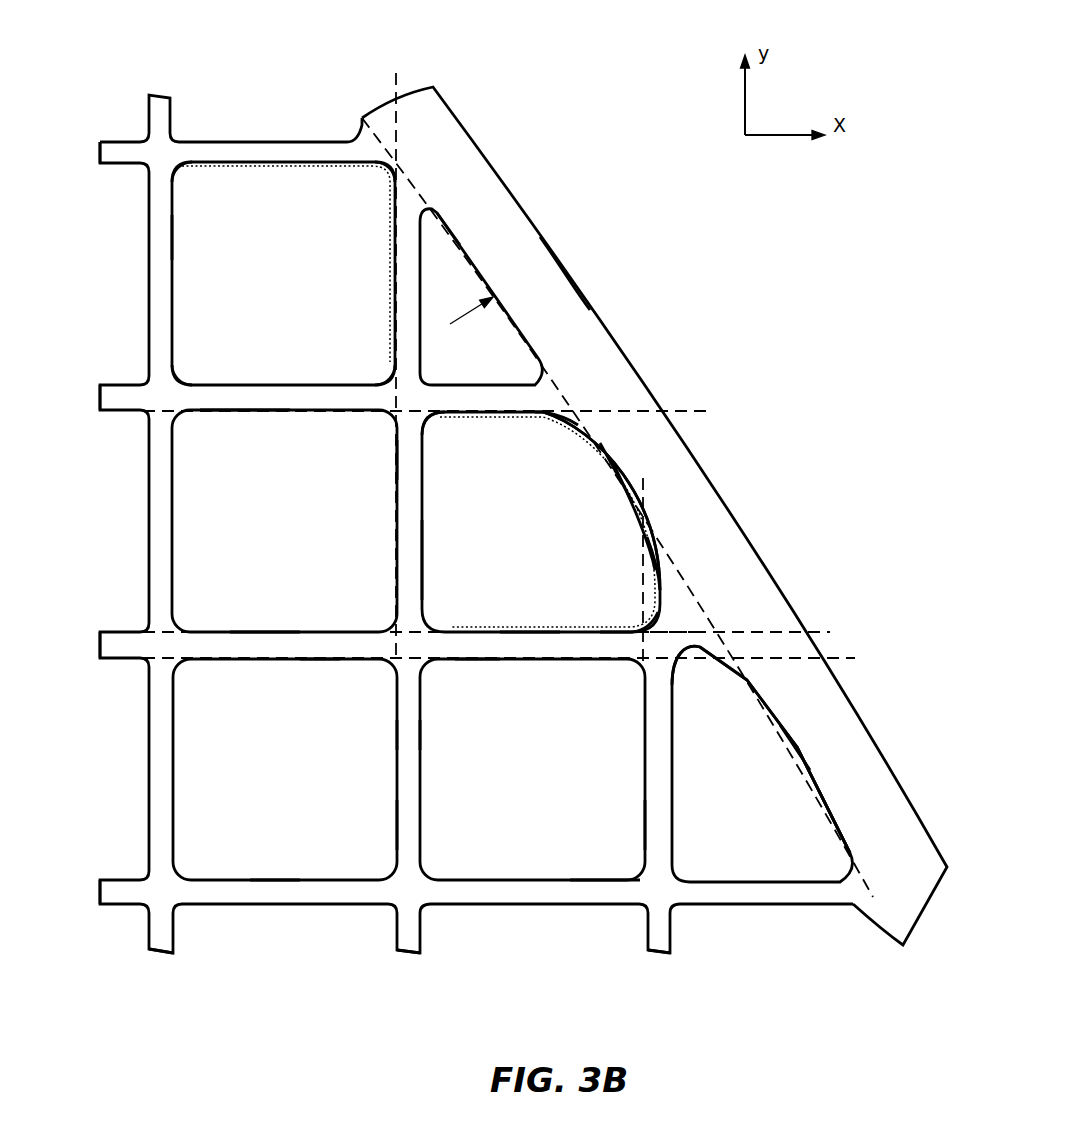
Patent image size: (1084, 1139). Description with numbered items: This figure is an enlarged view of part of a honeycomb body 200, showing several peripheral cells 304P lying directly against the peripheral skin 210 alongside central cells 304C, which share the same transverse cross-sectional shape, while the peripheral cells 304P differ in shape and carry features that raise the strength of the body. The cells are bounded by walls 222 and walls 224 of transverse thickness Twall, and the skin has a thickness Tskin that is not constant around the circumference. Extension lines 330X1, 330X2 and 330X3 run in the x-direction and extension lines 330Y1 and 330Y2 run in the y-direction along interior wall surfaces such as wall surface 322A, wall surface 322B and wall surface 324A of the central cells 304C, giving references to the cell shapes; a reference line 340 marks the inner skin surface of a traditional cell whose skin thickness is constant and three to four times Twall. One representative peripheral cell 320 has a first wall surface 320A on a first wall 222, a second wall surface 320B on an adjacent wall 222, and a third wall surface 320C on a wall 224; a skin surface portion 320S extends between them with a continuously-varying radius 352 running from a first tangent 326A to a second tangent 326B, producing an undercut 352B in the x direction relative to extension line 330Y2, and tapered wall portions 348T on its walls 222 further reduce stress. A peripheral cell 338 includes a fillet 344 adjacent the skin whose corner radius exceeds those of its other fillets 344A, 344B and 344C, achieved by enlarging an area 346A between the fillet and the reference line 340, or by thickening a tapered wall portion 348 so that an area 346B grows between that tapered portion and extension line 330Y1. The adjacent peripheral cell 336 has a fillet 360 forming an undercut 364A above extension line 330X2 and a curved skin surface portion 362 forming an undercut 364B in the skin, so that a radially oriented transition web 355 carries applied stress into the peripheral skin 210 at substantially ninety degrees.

The honeycomb body 200 is at (233, 73).
The peripheral skin 210 is at (583, 291).
The wall 222 is at (100, 152).
The wall 224 is at (162, 955).
The peripheral cell 304P is at (298, 277).
The central cell 304C is at (305, 534).
The peripheral cell 320 is at (626, 477).
The first wall surface 320A is at (441, 417).
The second wall surface 320B is at (525, 632).
The third wall surface 320C is at (423, 563).
The skin surface portion 320S is at (646, 528).
The wall surface 322A is at (120, 413).
The wall surface 322B is at (263, 632).
The wall surface 324A is at (397, 460).
The first tangent 326A is at (548, 423).
The second tangent 326B is at (622, 632).
The extension line 330X1 is at (683, 411).
The extension line 330X2 is at (855, 658).
The extension line 330X3 is at (830, 632).
The extension line 330Y1 is at (396, 85).
The extension line 330Y2 is at (648, 500).
The peripheral cell 336 is at (847, 829).
The peripheral cell 338 is at (172, 233).
The reference line 340 is at (787, 747).
The fillet 344 is at (385, 172).
The fillet 344A is at (178, 168).
The fillet 344B is at (180, 378).
The fillet 344C is at (387, 378).
The area 346A is at (400, 177).
The area 346B is at (392, 225).
The tapered wall portion 348 is at (292, 168).
The tapered wall portion 348T is at (523, 420).
The continuously-varying radius 352 is at (628, 490).
The undercut 352B is at (656, 578).
The transition web 355 is at (673, 627).
The fillet 360 is at (743, 678).
The skin surface portion 362 is at (800, 775).
The undercut 364A is at (690, 650).
The undercut 364B is at (797, 760).
The skin thickness Tskin is at (560, 253).
The transverse thickness of the walls Twall is at (420, 736).